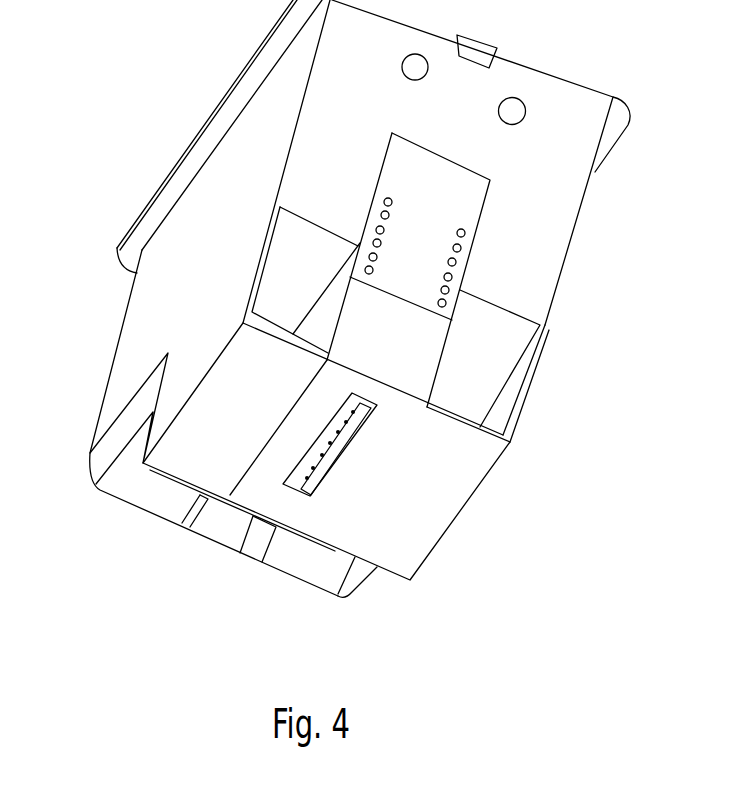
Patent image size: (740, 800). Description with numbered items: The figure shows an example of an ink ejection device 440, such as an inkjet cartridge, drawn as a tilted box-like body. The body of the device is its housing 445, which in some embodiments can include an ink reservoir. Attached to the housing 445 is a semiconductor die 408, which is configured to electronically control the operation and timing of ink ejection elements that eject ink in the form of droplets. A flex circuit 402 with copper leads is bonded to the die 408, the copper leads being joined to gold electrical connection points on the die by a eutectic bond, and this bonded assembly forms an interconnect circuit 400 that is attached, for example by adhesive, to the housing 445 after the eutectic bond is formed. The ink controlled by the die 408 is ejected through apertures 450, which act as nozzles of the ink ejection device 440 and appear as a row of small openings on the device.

The ink ejection device 440 is at (385, 612).
The housing 445 is at (100, 396).
The interconnect circuit 400 is at (255, 513).
The flex circuit 402 is at (315, 517).
The semiconductor die 408 is at (302, 491).
The apertures 450 is at (340, 445).